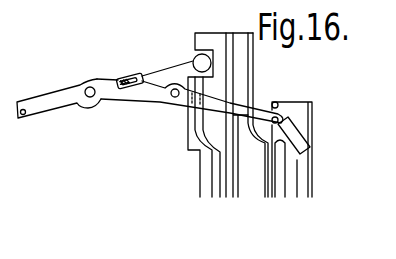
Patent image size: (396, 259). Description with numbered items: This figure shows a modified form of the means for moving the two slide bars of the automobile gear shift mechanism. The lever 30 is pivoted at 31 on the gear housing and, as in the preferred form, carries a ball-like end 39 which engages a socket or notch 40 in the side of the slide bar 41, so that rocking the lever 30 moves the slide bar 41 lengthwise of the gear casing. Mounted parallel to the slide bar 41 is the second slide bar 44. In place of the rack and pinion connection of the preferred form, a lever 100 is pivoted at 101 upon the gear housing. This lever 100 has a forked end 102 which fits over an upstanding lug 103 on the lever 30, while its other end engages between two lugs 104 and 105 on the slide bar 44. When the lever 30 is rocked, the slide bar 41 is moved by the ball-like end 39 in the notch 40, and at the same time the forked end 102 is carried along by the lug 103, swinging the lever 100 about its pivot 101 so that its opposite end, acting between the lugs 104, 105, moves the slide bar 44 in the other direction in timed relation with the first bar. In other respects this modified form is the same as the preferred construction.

The lever 30 is at (45, 98).
The pivot 31 is at (87, 88).
The ball-like end 39 is at (195, 55).
The socket or notch 40 is at (203, 52).
The slide bar 41 is at (213, 81).
The slide bar 44 is at (305, 107).
The lever 100 is at (157, 89).
The pivot 101 is at (175, 98).
The forked end 102 is at (129, 75).
The upstanding lug 103 is at (117, 77).
The lug 104 is at (277, 102).
The lug 105 is at (283, 119).